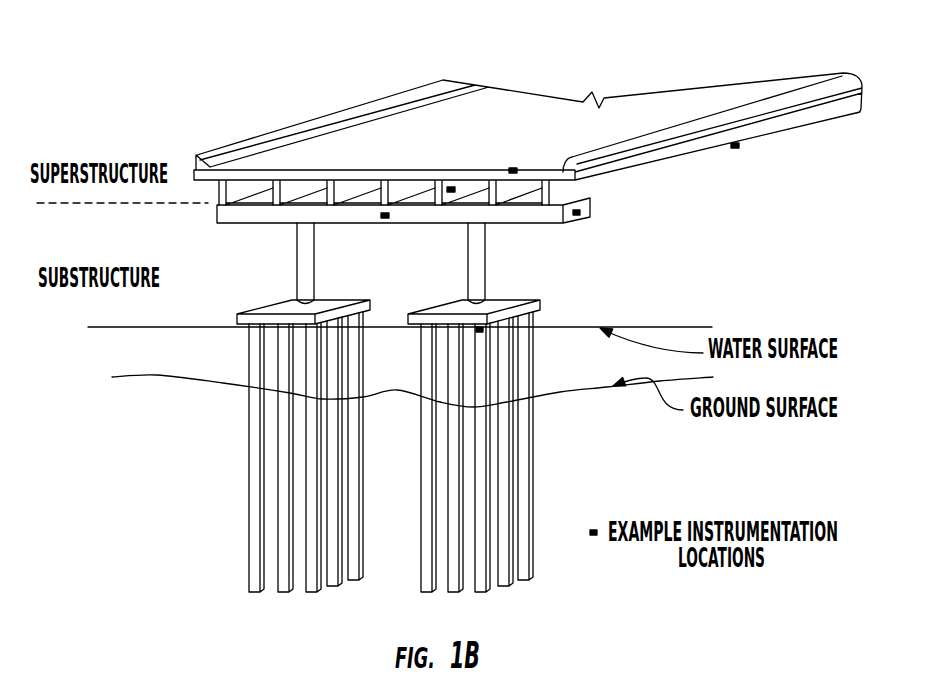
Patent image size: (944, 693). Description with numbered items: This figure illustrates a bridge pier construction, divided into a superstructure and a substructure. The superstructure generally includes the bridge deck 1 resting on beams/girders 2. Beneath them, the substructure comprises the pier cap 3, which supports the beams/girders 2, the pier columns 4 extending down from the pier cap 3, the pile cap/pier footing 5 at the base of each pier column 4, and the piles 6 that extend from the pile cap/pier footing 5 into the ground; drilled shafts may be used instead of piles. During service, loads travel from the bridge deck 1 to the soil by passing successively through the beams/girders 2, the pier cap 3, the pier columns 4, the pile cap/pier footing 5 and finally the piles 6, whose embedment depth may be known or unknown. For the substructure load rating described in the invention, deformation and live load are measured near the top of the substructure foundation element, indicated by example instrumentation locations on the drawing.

The bridge deck 1 is at (482, 110).
The beams/girders 2 is at (590, 182).
The pier cap 3 is at (589, 212).
The pier columns 4 is at (486, 267).
The pile cap/pier footing 5 is at (544, 302).
The piles 6 is at (524, 438).